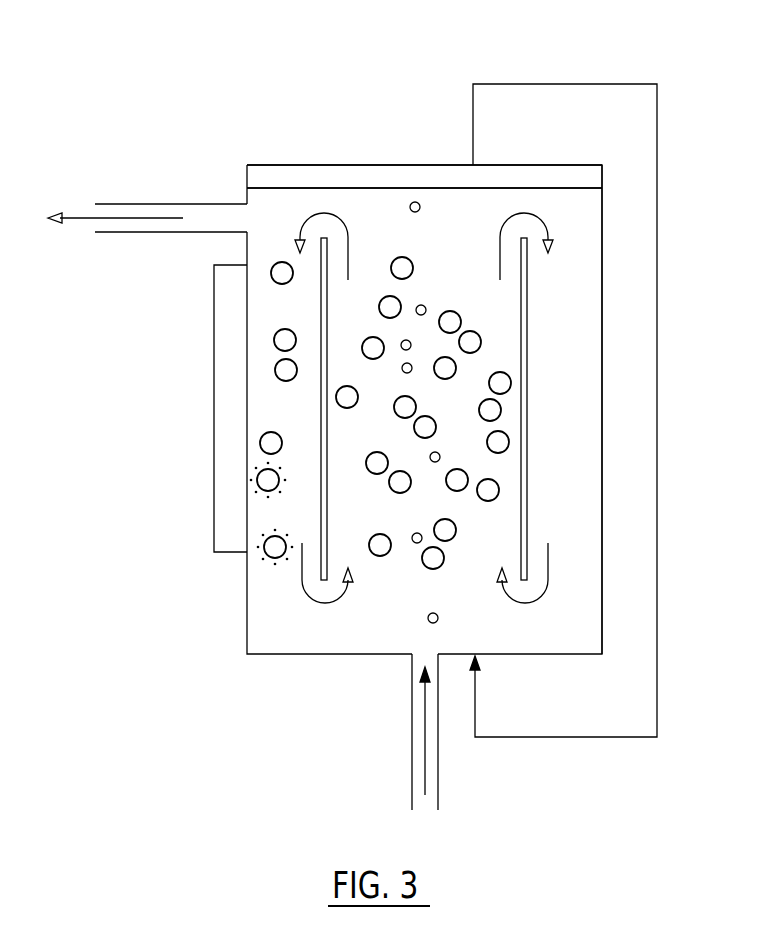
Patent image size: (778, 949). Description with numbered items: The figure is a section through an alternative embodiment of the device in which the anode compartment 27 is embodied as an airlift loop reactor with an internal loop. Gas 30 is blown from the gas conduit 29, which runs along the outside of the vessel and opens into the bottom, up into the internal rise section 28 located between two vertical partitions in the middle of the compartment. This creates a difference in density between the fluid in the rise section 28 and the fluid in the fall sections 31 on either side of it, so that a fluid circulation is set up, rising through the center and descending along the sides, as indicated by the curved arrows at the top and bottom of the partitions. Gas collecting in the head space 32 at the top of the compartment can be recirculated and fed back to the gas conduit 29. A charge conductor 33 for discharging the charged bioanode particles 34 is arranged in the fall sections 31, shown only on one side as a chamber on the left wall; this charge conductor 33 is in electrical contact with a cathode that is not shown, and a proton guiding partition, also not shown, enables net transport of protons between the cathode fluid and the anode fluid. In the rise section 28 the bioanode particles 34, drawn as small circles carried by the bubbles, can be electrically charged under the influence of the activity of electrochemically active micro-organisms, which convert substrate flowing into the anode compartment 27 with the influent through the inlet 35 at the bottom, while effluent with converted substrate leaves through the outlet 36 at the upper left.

The anode compartment 27 is at (212, 110).
The internal rise section 28 is at (503, 313).
The gas conduit 29 is at (660, 696).
The gas 30 is at (415, 202).
The fall sections 31 is at (577, 373).
The head space 32 is at (297, 128).
The charge conductor 33 is at (232, 358).
The bioanode particles 34 is at (400, 257).
The inlet 35 is at (412, 763).
The outlet 36 is at (185, 203).